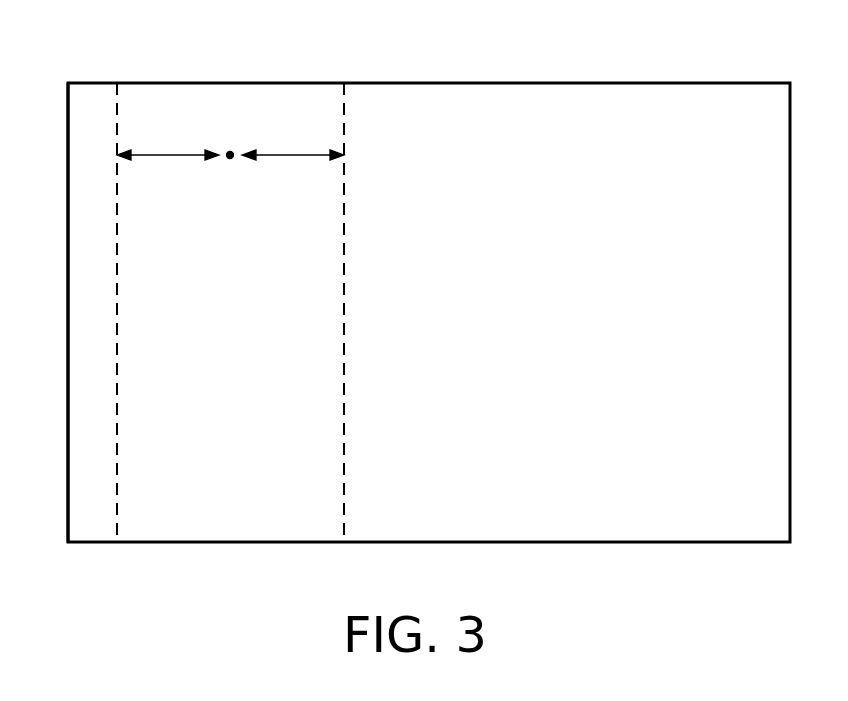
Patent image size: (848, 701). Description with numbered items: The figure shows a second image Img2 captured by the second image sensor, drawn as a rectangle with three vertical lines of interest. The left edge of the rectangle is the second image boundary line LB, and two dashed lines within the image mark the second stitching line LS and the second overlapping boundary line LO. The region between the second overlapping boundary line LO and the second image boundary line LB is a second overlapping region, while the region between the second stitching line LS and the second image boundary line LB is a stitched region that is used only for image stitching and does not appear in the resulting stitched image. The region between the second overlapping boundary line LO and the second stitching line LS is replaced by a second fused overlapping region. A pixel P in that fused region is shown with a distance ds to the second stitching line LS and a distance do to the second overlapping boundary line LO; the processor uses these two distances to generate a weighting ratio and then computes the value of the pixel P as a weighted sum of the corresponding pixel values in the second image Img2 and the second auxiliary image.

The second image Img2 is at (562, 83).
The second image boundary line LB is at (68, 105).
The second stitching line LS is at (117, 92).
The second overlapping boundary line LO is at (344, 92).
The distance between the pixel and the second stitching line ds is at (168, 169).
The distance between the pixel and the second overlapping boundary line do is at (293, 169).
The pixel P is at (230, 160).